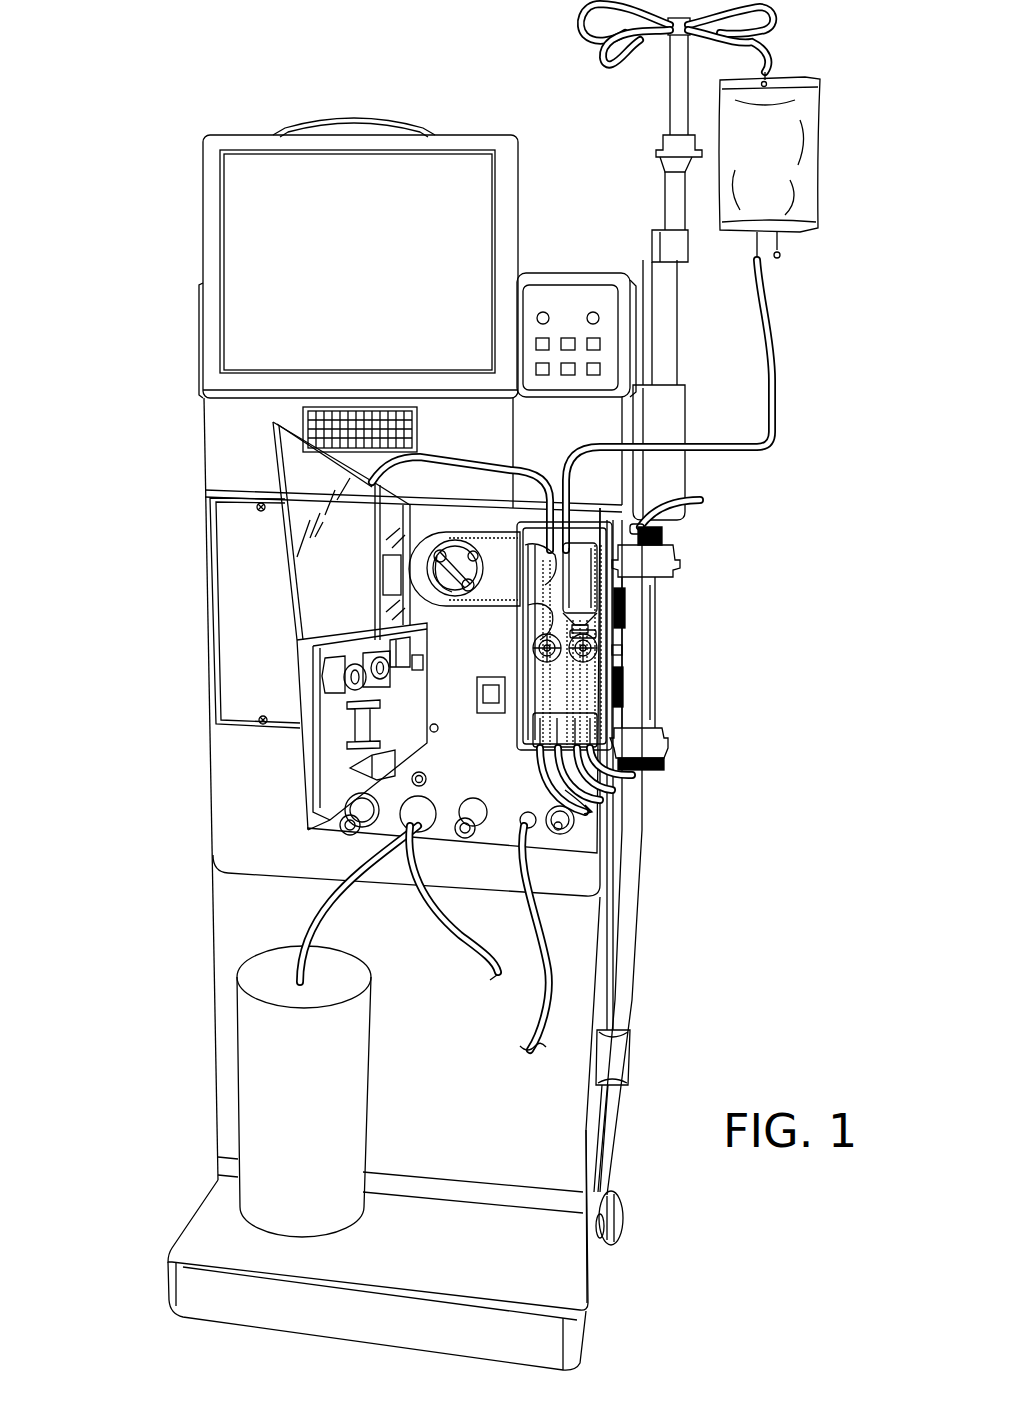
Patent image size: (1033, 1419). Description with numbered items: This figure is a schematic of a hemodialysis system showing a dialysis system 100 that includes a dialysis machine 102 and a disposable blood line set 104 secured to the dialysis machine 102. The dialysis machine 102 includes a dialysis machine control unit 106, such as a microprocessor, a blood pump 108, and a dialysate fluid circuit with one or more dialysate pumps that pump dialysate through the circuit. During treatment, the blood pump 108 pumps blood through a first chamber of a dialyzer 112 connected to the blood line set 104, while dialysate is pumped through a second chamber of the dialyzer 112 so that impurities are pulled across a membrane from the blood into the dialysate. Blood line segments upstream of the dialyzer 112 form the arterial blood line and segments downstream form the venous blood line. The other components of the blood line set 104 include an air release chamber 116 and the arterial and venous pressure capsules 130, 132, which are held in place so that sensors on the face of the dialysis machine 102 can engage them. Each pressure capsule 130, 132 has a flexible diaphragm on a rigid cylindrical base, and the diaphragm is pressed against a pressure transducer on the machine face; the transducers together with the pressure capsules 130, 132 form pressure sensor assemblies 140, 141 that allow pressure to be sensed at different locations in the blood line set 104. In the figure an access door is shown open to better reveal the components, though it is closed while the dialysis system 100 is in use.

The dialysis system 100 is at (110, 121).
The dialysis machine 102 is at (196, 512).
The disposable blood line set 104 is at (700, 500).
The dialysis machine control unit 106 is at (547, 300).
The blood pump 108 is at (452, 560).
The dialyzer 112 is at (640, 705).
The air release chamber 116 is at (577, 582).
The arterial pressure capsule 130 is at (519, 642).
The venous pressure capsule 132 is at (592, 660).
The pressure sensor assembly 140 is at (543, 652).
The pressure sensor assembly 141 is at (590, 636).